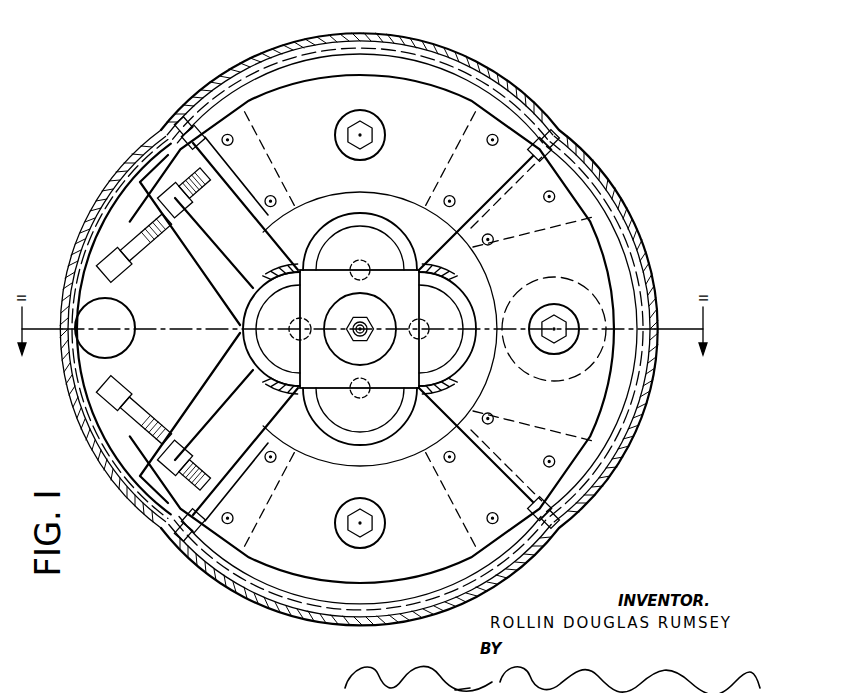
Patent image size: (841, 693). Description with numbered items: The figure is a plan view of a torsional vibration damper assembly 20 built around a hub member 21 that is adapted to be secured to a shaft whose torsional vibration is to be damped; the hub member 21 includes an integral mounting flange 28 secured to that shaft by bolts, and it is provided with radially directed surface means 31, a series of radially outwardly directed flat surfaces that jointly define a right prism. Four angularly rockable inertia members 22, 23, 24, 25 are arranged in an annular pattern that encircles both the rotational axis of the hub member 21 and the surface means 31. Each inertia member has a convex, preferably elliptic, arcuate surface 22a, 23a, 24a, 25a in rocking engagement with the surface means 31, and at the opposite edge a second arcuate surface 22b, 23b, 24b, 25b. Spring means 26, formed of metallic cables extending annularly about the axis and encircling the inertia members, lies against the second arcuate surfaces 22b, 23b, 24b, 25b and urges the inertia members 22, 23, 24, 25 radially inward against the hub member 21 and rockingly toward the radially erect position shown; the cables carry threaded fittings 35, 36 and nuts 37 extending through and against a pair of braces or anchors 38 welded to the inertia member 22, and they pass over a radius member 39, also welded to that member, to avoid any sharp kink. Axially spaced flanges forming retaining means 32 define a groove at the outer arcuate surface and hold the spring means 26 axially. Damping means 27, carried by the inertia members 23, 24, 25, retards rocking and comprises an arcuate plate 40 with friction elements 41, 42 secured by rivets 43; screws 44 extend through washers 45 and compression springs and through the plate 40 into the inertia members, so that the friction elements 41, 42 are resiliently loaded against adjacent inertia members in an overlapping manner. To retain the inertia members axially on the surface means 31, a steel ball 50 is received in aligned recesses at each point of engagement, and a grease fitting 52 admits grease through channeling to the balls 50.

The damper assembly 20 is at (646, 447).
The hub member 21 is at (418, 278).
The inertia member 22 is at (207, 300).
The arcuate surface 22a is at (290, 302).
The second arcuate surface 22b is at (152, 140).
The inertia member 23 is at (336, 66).
The arcuate surface 23a is at (288, 250).
The second arcuate surface 23b is at (185, 122).
The inertia member 24 is at (636, 308).
The arcuate surface 24a is at (440, 284).
The second arcuate surface 24b is at (562, 509).
The inertia member 25 is at (350, 598).
The arcuate surface 25a is at (333, 390).
The second arcuate surface 25b is at (537, 538).
The spring means 26 is at (66, 308).
The damping means 27 is at (600, 265).
The mounting flange 28 is at (289, 416).
The radially directed surface means 31 is at (400, 230).
The axial retaining means 32 is at (73, 230).
The threaded fitting 35 is at (140, 392).
The threaded fitting 36 is at (140, 242).
The nut 37 is at (190, 207).
The brace or anchor 38 is at (229, 277).
The radius member 39 is at (114, 322).
The arcuate plate 40 is at (441, 121).
The friction element 41 is at (259, 169).
The friction element 42 is at (489, 166).
The rivet 43 is at (440, 461).
The screw 44 is at (372, 130).
The washer 45 is at (340, 133).
The ball 50 is at (360, 258).
The grease fitting 52 is at (350, 320).